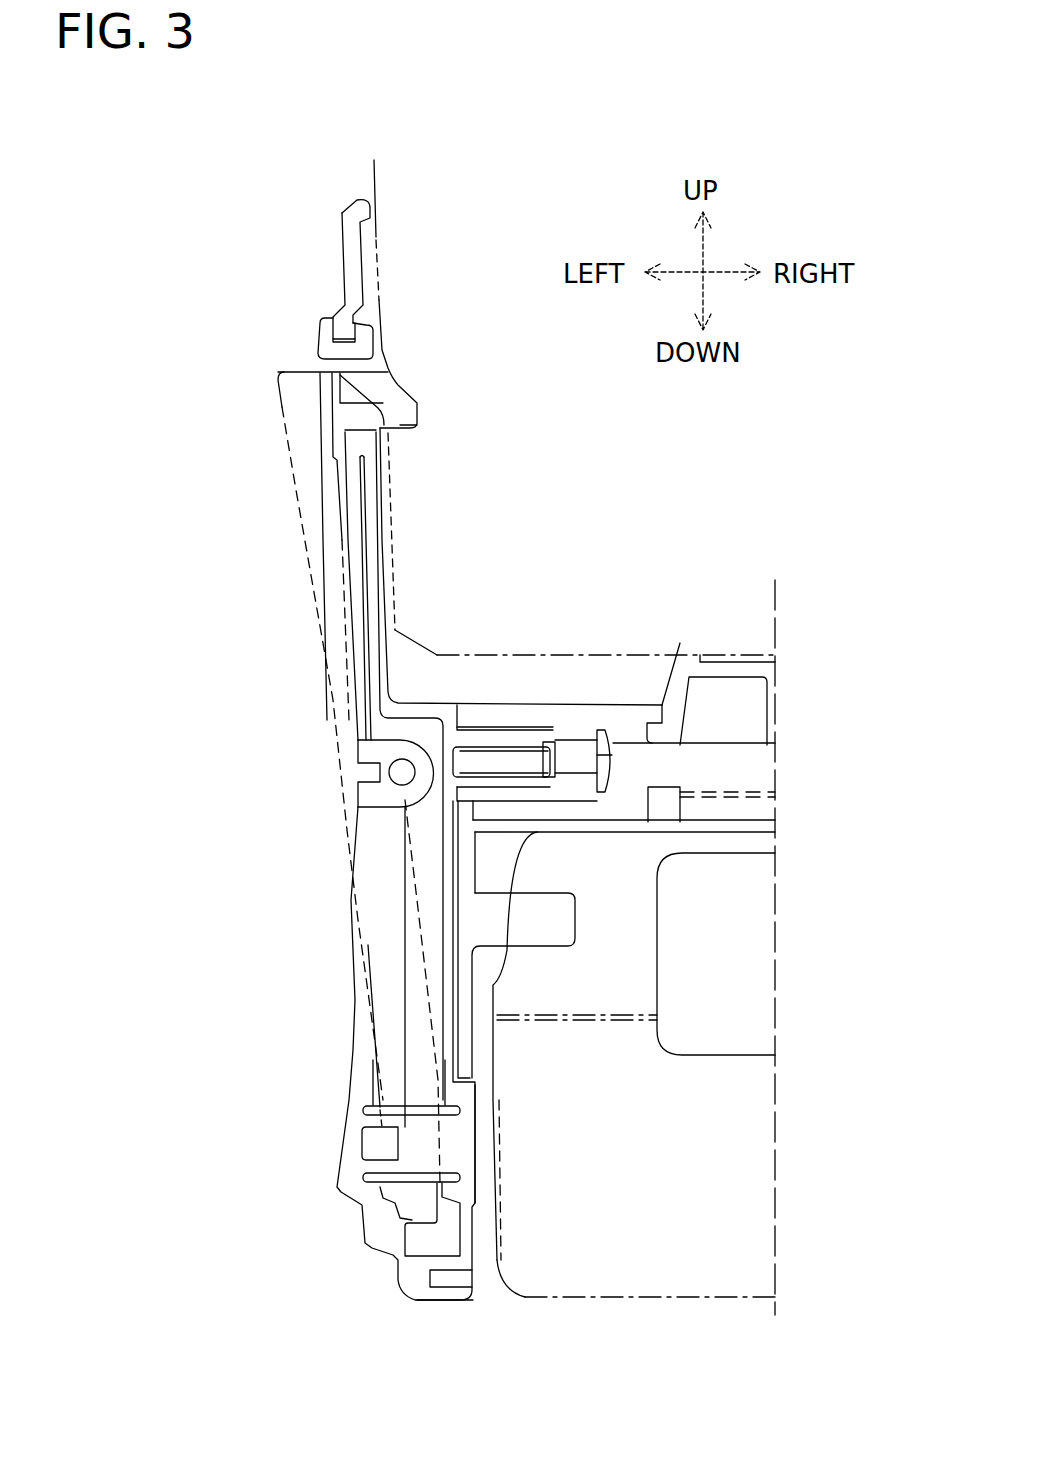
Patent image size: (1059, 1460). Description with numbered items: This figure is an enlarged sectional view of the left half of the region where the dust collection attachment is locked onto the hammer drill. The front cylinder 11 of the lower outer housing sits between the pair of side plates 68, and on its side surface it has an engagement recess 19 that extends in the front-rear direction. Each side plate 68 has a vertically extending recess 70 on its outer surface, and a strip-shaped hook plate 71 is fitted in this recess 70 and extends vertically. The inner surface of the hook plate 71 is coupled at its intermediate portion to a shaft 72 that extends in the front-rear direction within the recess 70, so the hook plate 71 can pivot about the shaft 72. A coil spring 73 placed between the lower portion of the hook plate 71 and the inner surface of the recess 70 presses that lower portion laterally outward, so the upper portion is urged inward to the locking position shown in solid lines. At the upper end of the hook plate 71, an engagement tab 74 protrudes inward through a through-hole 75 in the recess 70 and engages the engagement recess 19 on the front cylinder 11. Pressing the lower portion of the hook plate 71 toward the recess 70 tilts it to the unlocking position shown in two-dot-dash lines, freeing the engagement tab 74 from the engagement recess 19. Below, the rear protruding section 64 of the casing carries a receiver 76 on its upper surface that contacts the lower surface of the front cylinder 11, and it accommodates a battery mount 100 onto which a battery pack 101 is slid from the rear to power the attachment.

The front cylinder 11 is at (373, 182).
The engagement recess 19 is at (407, 378).
The side plate 68 is at (350, 262).
The recess 70 is at (443, 923).
The hook plate 71 is at (297, 412).
The shaft 72 is at (402, 772).
The coil spring 73 is at (417, 1183).
The engagement tab 74 is at (400, 420).
The through-hole 75 is at (356, 430).
The rear protruding section 64 is at (575, 722).
The receiver 76 is at (687, 663).
The battery mount 100 is at (758, 770).
The battery pack 101 is at (647, 1277).